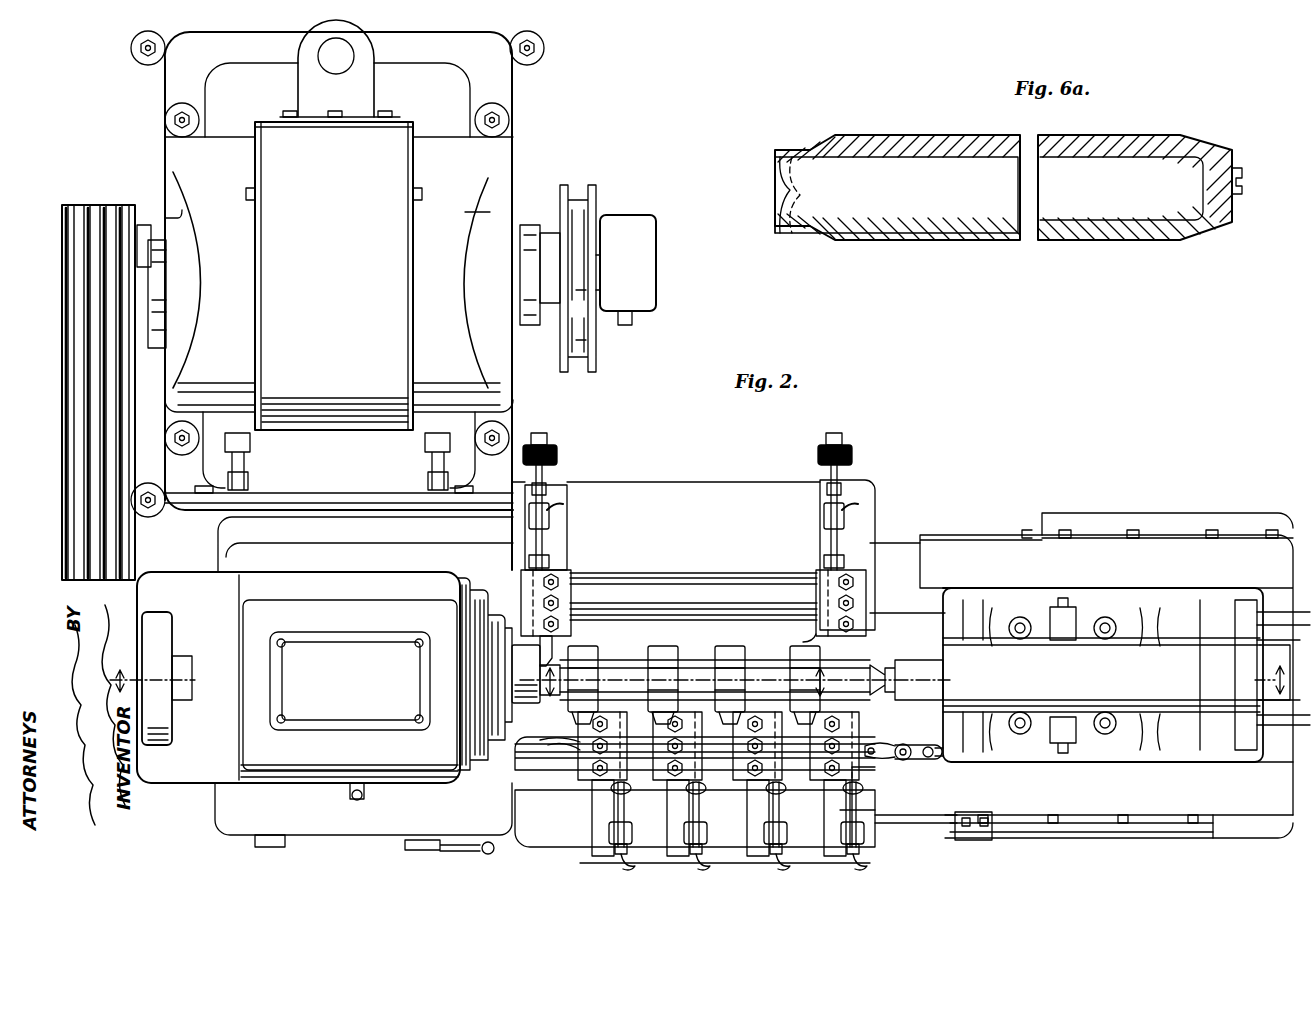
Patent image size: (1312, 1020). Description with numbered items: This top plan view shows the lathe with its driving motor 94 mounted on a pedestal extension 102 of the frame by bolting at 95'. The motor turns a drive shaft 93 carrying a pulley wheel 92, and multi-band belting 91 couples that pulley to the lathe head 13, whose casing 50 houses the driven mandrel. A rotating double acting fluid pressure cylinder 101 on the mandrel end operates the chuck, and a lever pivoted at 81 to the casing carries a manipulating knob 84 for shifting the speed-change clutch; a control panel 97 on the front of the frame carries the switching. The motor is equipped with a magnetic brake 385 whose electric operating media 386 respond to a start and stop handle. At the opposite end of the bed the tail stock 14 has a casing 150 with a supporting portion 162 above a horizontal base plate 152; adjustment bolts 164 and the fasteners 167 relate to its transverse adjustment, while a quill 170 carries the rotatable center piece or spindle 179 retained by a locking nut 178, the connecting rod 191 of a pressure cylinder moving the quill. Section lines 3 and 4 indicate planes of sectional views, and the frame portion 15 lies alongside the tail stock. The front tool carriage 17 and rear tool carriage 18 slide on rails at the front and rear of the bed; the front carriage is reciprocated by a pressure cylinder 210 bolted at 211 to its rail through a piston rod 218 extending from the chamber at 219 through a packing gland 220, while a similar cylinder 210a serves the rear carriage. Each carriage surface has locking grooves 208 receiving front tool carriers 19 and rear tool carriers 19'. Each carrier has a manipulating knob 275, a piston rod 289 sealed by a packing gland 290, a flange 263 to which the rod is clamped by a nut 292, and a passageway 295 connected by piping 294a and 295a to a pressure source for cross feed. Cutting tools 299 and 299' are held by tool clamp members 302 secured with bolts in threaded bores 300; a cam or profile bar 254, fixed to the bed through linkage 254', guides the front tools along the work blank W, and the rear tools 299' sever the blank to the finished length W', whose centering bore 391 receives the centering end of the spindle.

In FIG. 2, the pedestal extension 102 is at (470, 78).
In FIG. 2, the bolting 95' is at (368, 275).
In FIG. 2, the driving motor 94 is at (496, 177).
In FIG. 2, the magnetic brake 385 is at (596, 205).
In FIG. 2, the electric operating media 386 is at (630, 220).
In FIG. 2, the pulley wheel 92 is at (100, 205).
In FIG. 2, the drive shaft 93 is at (143, 230).
In FIG. 2, the multi-band belting 91 is at (75, 395).
In FIG. 2, the casing 50 is at (240, 590).
In FIG. 2, the lathe head 13 is at (241, 760).
In FIG. 2, the double acting rotating fluid pressure cylinder 101 is at (160, 630).
In FIG. 2, the section line 3 is at (335, 692).
In FIG. 2, the control panel 97 is at (222, 820).
In FIG. 2, the pivot 81 is at (308, 823).
In FIG. 2, the manipulating knob 84 is at (365, 800).
In FIG. 2, the tail stock 14 is at (937, 623).
In FIG. 2, the tool carriage 18 is at (868, 518).
In FIG. 2, the tool clamp member 302 is at (580, 592).
In FIG. 2, the locking grooves 208 is at (705, 600).
In FIG. 2, the threaded bores 300 is at (550, 580).
In FIG. 2, the cutting tool 299 is at (694, 685).
In FIG. 2, the cutting tools 299' is at (690, 549).
In FIG. 2, the manipulating knob 275 is at (557, 455).
In FIG. 2, the connecting rod 191 is at (549, 442).
In FIG. 2, the piston rod 289 is at (552, 512).
In FIG. 2, the tool carriers 19 is at (710, 826).
In FIG. 2, the tool carriers 19' is at (863, 456).
In FIG. 2, the flange 263 is at (622, 825).
In FIG. 2, the clamping nut 292 is at (698, 825).
In FIG. 2, the packing gland arrangement 290 is at (696, 790).
In FIG. 2, the piping 294a is at (790, 825).
In FIG. 2, the passageway 295 is at (865, 728).
In FIG. 2, the piping 295a is at (800, 640).
In FIG. 2, the work blank W is at (735, 663).
In FIG. 2, the locking nut 178 is at (900, 655).
In FIG. 2, the tail stock rotatable center piece or spindle 179 is at (878, 655).
In FIG. 2, the cam or profile bar 254 is at (754, 747).
In FIG. 2, the link arm 254' is at (691, 782).
In FIG. 2, the piston rod 218 is at (918, 832).
In FIG. 2, the rod outlet 219 is at (944, 801).
In FIG. 2, the packing gland arrangement 220 is at (970, 840).
In FIG. 2, the tool carriage 17 is at (875, 803).
In FIG. 2, the bed rail 15 is at (966, 548).
In FIG. 2, the double acting pressure cylinder 210 is at (1080, 838).
In FIG. 2, the pressure cylinder 210a is at (1140, 512).
In FIG. 2, the bolting 211 is at (1195, 815).
In FIG. 2, the tail stock quill 170 is at (945, 672).
In FIG. 2, the bolt 167 is at (1020, 617).
In FIG. 2, the adjustment screw or bolt 164 is at (1066, 597).
In FIG. 2, the casing 150 is at (1180, 708).
In FIG. 2, the supporting portion 162 is at (1140, 735).
In FIG. 2, the base plate 152 is at (1015, 752).
In FIG. 2, the section line 4 is at (1053, 675).
In FIG. 6A, the finished blank W' is at (1003, 208).
In FIG. 6A, the centering bore 391 is at (1243, 175).